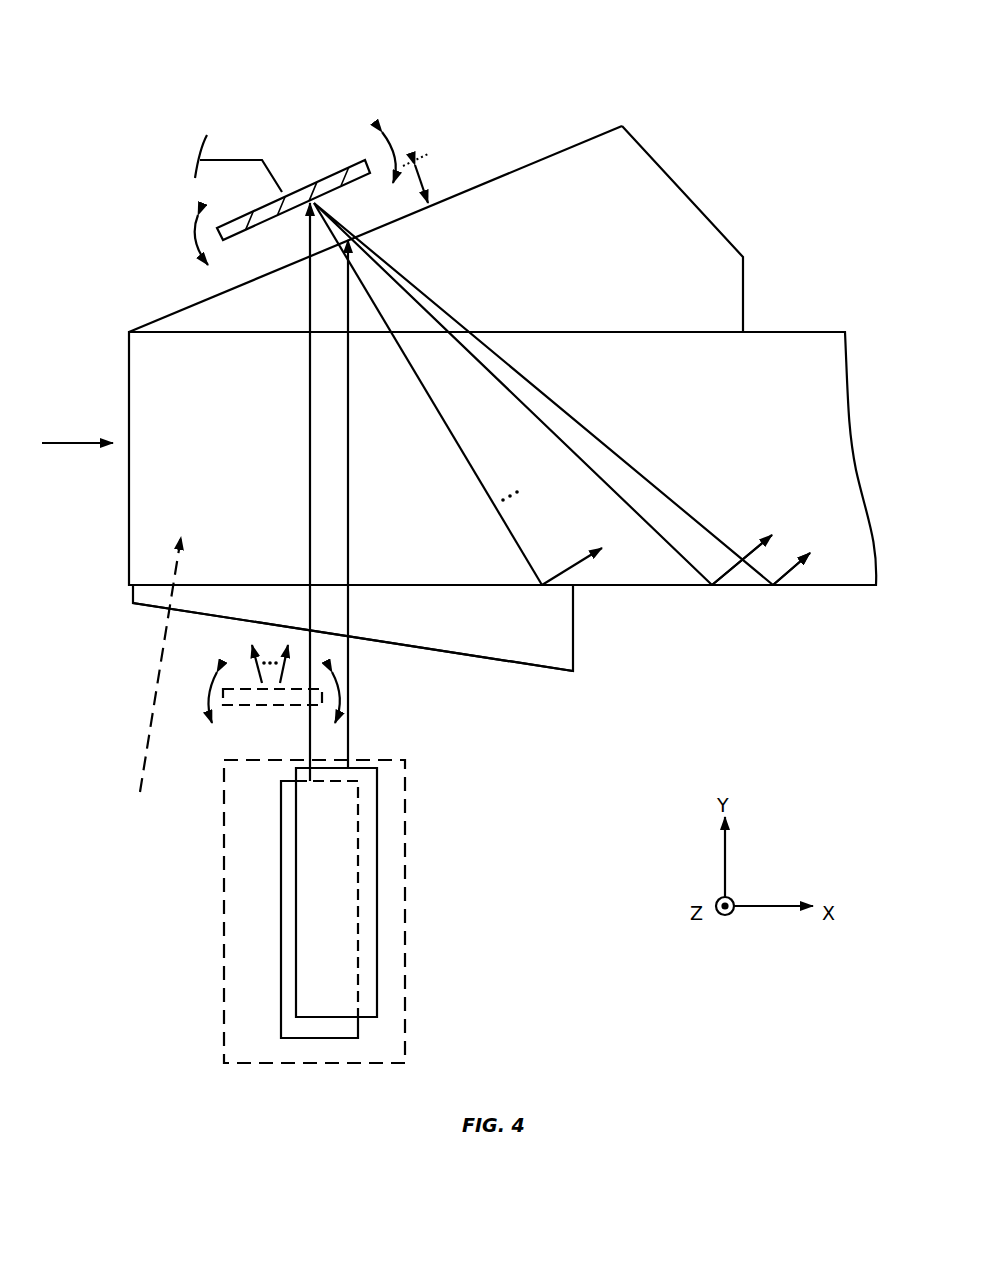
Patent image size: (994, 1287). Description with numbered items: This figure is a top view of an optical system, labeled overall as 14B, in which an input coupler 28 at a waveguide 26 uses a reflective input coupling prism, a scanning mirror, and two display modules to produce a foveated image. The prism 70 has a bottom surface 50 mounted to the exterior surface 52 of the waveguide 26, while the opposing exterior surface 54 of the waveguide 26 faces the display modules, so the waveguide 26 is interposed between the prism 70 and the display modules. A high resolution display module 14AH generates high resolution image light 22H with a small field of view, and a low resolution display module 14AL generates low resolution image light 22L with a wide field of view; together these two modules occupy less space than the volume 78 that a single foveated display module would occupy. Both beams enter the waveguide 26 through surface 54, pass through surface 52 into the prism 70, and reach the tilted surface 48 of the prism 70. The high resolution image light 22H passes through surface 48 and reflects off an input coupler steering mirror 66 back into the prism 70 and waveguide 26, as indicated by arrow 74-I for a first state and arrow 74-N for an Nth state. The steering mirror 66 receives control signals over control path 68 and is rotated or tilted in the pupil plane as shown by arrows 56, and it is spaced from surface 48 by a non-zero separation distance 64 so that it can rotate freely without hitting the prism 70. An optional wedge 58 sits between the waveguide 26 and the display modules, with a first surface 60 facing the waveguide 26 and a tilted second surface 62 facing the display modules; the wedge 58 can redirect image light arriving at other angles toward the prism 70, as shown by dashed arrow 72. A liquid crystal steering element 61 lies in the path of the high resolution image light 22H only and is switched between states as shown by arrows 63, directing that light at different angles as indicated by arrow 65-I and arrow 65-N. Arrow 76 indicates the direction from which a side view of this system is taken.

The display module 14B is at (798, 60).
The waveguide 26 is at (812, 345).
The input coupler 28 is at (519, 259).
The surface of prism 48 is at (530, 170).
The prism 70 is at (692, 208).
The bottom surface 50 is at (597, 330).
The exterior surface 52 is at (655, 334).
The exterior surface 54 is at (612, 583).
The wedge 58 is at (570, 655).
The first surface 60 is at (485, 590).
The second surface 62 is at (518, 659).
The input coupler steering mirror 66 is at (310, 195).
The control path 68 is at (240, 160).
The arrows 56 is at (200, 250).
The separation distance 64 is at (430, 182).
The high resolution image light 22H is at (310, 392).
The low resolution image light 22L is at (348, 440).
The arrow 74-I is at (488, 503).
The arrow 74-N is at (570, 413).
The arrow 76 is at (80, 447).
The dashed arrow 72 is at (152, 735).
The liquid crystal steering element 61 is at (330, 702).
The arrows 63 is at (208, 678).
The arrow 65-I is at (253, 667).
The arrow 65-N is at (290, 664).
The volume 78 is at (224, 1045).
The low resolution display module 14AL is at (377, 900).
The high resolution display module 14AH is at (281, 968).